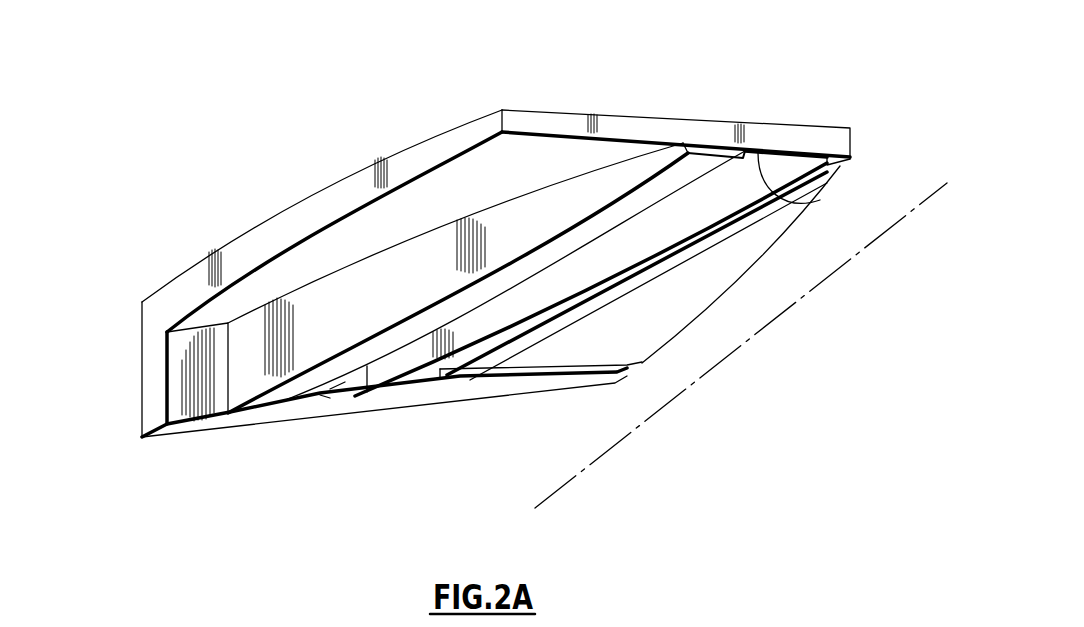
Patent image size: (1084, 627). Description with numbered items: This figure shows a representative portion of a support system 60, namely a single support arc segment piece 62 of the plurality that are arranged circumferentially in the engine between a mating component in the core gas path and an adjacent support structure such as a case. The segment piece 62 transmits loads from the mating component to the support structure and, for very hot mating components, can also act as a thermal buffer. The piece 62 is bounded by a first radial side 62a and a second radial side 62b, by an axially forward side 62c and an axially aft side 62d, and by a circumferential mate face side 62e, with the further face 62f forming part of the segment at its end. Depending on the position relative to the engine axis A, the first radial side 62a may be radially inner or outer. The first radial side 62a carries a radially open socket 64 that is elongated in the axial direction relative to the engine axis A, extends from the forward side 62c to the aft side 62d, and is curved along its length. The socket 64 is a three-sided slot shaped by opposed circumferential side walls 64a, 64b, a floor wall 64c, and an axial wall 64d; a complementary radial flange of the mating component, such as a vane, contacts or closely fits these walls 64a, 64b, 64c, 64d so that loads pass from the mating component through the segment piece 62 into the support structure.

The support system 60 is at (249, 178).
The support arc segment piece 62 is at (757, 290).
The first radial side 62a is at (551, 355).
The second radial side 62b is at (398, 150).
The axially forward side 62c is at (763, 135).
The axially aft side 62d is at (142, 382).
The circumferential mate face side 62e is at (142, 302).
The notch 62f is at (848, 157).
The radially open socket 64 is at (385, 362).
The circumferential side wall 64a is at (337, 384).
The circumferential side wall 64b is at (428, 372).
The floor wall 64c is at (808, 209).
The axial wall 64d is at (325, 393).
The engine axis A is at (650, 420).